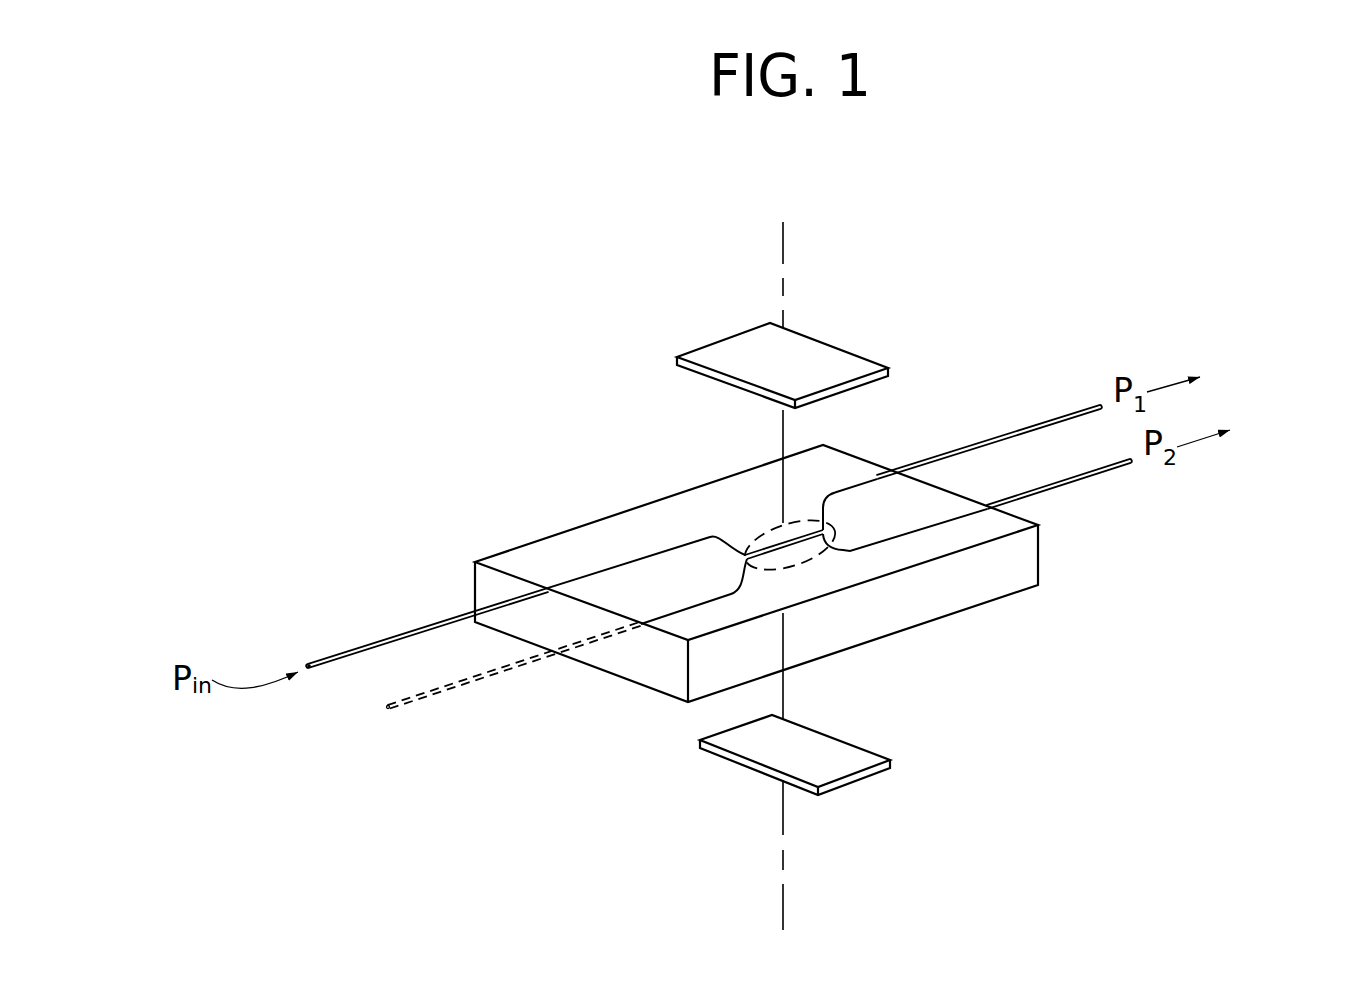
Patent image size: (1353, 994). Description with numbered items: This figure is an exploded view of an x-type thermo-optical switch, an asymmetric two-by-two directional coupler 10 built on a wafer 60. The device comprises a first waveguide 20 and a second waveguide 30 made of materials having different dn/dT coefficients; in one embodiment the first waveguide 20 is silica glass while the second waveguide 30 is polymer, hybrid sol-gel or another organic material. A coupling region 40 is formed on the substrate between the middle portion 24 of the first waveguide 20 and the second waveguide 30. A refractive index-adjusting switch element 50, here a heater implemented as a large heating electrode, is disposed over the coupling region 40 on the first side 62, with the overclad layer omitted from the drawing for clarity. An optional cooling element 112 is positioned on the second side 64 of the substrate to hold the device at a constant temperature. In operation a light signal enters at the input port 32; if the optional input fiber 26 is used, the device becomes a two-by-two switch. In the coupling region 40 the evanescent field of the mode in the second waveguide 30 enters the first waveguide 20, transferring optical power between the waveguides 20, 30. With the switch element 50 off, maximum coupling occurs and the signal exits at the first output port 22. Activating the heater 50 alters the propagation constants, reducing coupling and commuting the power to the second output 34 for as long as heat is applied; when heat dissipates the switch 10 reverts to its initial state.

The asymmetric 2×2 directional coupler 10 is at (1135, 552).
The first waveguide 20 is at (963, 521).
The first output port 22 is at (1099, 483).
The middle portion 24 is at (792, 553).
The optional input fiber 26 is at (384, 710).
The second waveguide 30 is at (878, 466).
The input port 32 is at (339, 665).
The second output 34 is at (1057, 412).
The coupling region 40 is at (822, 563).
The refractive index-adjusting switch element 50 is at (752, 361).
The wafer 60 is at (472, 584).
The first side 62 is at (541, 560).
The second side 64 is at (655, 695).
The cooling element 112 is at (822, 766).